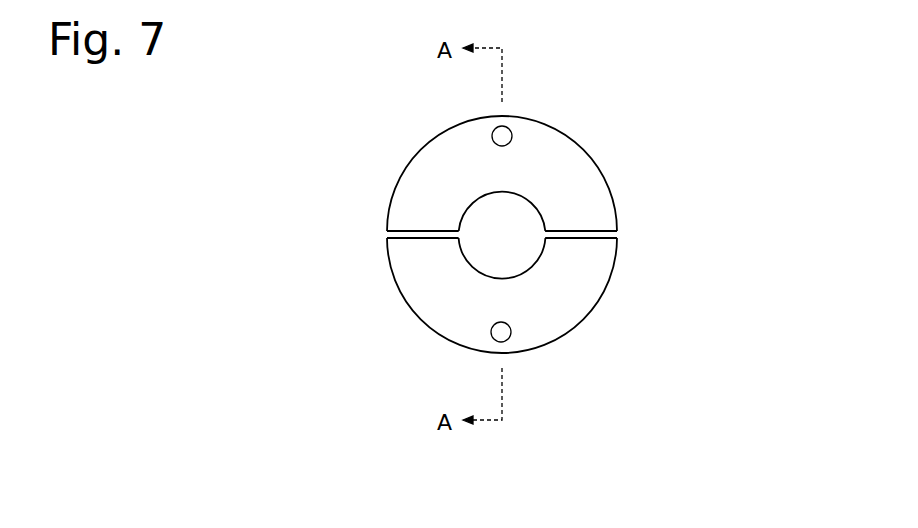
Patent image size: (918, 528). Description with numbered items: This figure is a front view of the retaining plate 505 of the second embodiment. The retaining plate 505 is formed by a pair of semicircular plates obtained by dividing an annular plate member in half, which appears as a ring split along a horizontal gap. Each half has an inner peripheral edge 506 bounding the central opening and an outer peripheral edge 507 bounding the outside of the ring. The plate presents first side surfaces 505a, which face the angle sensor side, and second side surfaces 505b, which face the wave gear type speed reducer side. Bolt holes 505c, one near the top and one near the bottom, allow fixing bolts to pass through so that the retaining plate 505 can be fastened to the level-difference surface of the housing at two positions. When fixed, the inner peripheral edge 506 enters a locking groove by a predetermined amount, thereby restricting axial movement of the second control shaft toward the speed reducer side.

The retaining plate 505 is at (566, 130).
The first side surface 505a is at (585, 188).
The second side surface 505b is at (581, 200).
The bolt hole 505c is at (491, 140).
The inner peripheral edge 506 is at (472, 205).
The outer peripheral edge 507 is at (595, 167).